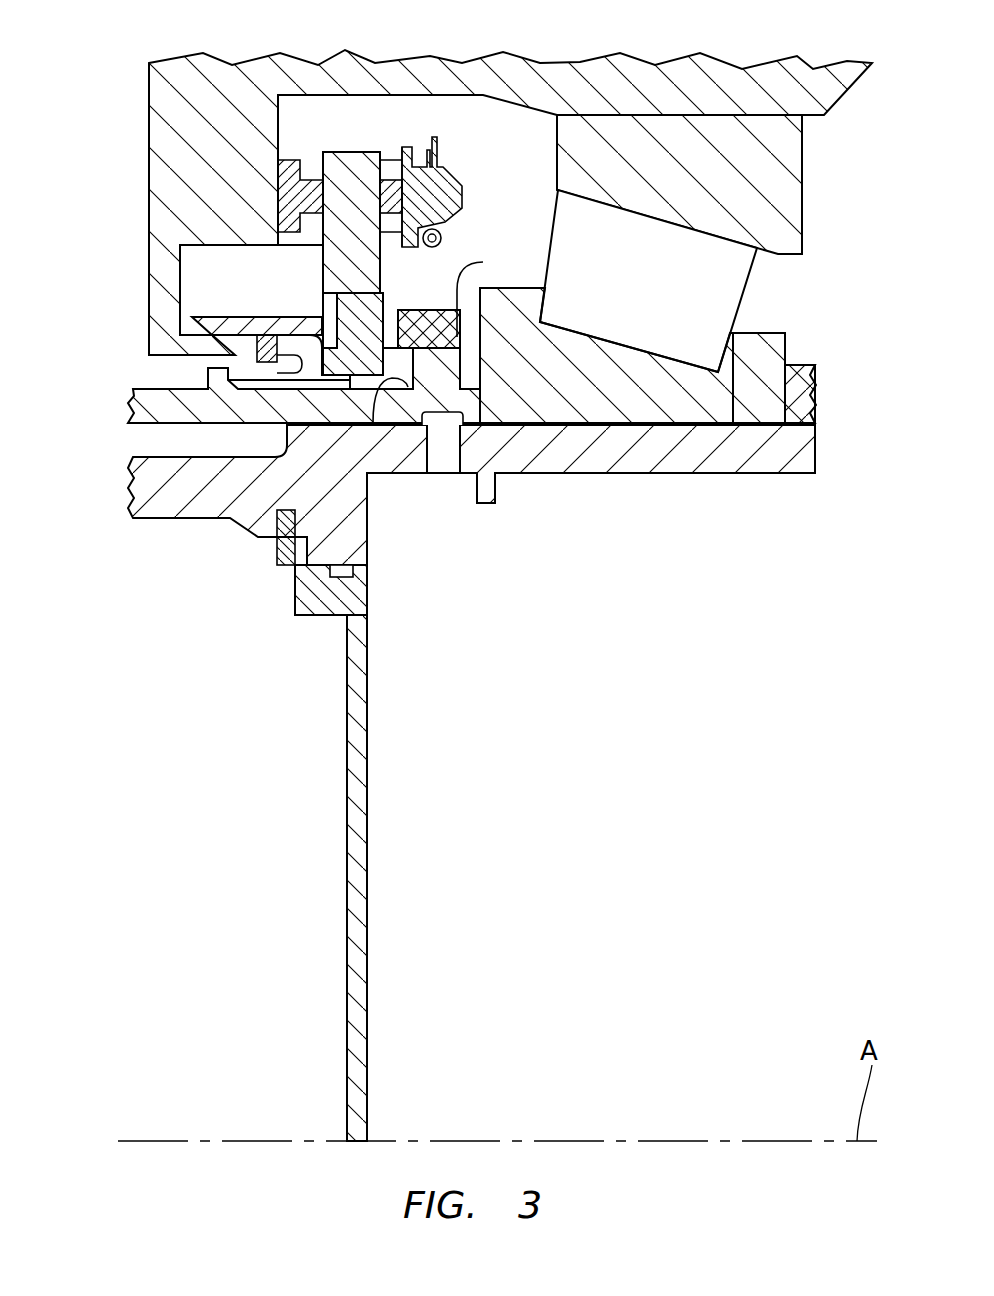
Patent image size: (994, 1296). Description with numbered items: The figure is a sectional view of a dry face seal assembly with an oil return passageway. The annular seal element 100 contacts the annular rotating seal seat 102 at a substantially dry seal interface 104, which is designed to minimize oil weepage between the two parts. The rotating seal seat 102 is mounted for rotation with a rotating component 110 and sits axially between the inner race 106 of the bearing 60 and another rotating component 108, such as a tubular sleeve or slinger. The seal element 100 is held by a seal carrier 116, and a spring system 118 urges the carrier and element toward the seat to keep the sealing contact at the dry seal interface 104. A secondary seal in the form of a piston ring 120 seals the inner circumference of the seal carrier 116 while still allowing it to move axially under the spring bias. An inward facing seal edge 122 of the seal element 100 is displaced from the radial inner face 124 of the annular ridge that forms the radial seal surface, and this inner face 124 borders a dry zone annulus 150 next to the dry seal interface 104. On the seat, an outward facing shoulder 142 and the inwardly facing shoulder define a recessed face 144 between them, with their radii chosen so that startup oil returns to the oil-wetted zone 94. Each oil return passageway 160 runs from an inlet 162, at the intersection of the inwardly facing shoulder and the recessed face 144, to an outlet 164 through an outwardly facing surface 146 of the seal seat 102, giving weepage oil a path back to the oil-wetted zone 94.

The bearing 60 is at (820, 209).
The oil-wetted zone 94 is at (536, 233).
The annular seal element 100 is at (390, 320).
The annular rotating seal seat 102 is at (472, 376).
The dry seal interface 104 is at (357, 296).
The inner race 106 is at (787, 351).
The rotating component 108 is at (130, 398).
The rotating component 110 is at (133, 489).
The seal carrier 116 is at (242, 317).
The spring system 118 is at (278, 170).
The piston ring 120 is at (272, 363).
The inward facing seal edge 122 is at (372, 388).
The radial inner face 124 is at (447, 330).
The outward facing shoulder 142 is at (376, 415).
The recessed face 144 is at (420, 362).
The outwardly facing surface 146 is at (422, 300).
The dry zone annulus 150 is at (157, 370).
The oil return passageway 160 is at (480, 342).
The inlet 162 is at (414, 300).
The outlet 164 is at (483, 262).